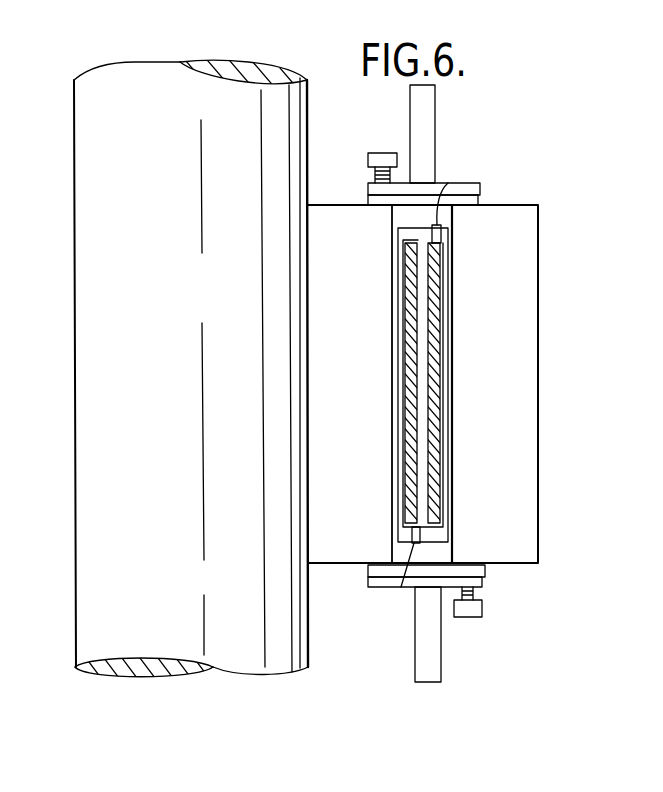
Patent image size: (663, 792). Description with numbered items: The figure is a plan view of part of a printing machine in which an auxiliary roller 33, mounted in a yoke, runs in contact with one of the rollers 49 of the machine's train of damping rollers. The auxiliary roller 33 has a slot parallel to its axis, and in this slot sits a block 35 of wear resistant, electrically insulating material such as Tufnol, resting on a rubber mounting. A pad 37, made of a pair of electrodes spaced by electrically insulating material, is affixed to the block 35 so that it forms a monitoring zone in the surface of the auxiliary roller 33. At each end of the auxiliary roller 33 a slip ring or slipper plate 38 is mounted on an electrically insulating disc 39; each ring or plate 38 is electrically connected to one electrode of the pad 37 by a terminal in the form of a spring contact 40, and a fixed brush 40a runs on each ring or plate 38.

The roller 49 is at (90, 100).
The auxiliary roller 33 is at (522, 358).
The block 35 is at (448, 532).
The pad 37 is at (403, 240).
The slip ring or slipper plate 38 is at (470, 186).
The electrically insulating disc 39 is at (474, 202).
The spring contact 40 is at (453, 240).
The fixed brush 40a is at (378, 137).